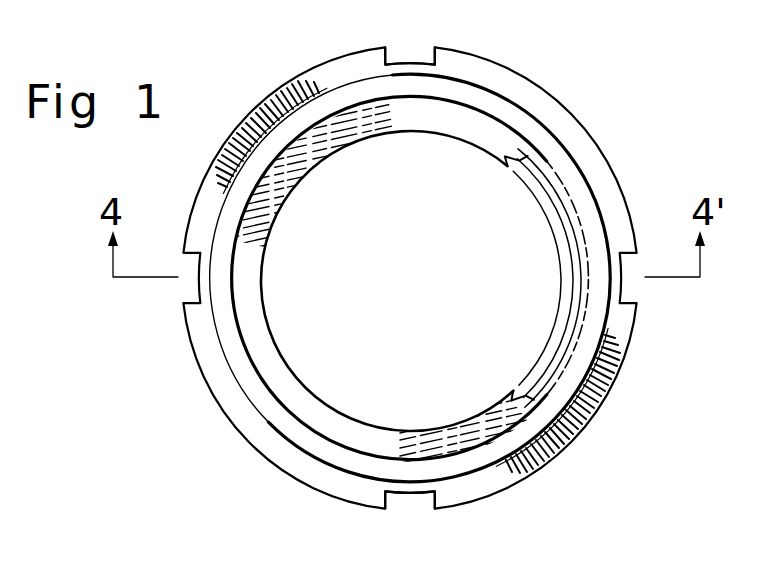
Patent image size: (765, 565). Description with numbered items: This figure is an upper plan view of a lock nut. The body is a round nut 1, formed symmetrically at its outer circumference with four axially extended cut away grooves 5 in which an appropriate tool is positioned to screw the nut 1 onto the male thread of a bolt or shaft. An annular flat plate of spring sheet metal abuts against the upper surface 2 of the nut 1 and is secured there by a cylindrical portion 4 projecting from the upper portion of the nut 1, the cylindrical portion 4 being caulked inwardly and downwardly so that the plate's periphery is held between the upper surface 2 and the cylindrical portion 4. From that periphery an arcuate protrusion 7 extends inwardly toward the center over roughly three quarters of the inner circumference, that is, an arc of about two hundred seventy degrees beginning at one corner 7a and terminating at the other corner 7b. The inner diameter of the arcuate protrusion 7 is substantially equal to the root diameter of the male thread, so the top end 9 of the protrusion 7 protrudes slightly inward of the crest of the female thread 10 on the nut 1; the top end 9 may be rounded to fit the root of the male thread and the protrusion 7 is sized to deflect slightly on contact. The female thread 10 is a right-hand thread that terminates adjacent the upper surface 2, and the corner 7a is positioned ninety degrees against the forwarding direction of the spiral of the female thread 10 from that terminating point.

The round nut 1 is at (622, 145).
The upper surface 2 is at (541, 157).
The cylindrical portion 4 is at (586, 206).
The cut away grooves 5 is at (443, 120).
The arcuate protrusion 7 is at (282, 372).
The corner of the protrusion 7a is at (507, 164).
The other corner of the protrusion 7b is at (512, 390).
The top end of the protrusion 9 is at (423, 428).
The female thread 10 is at (539, 190).